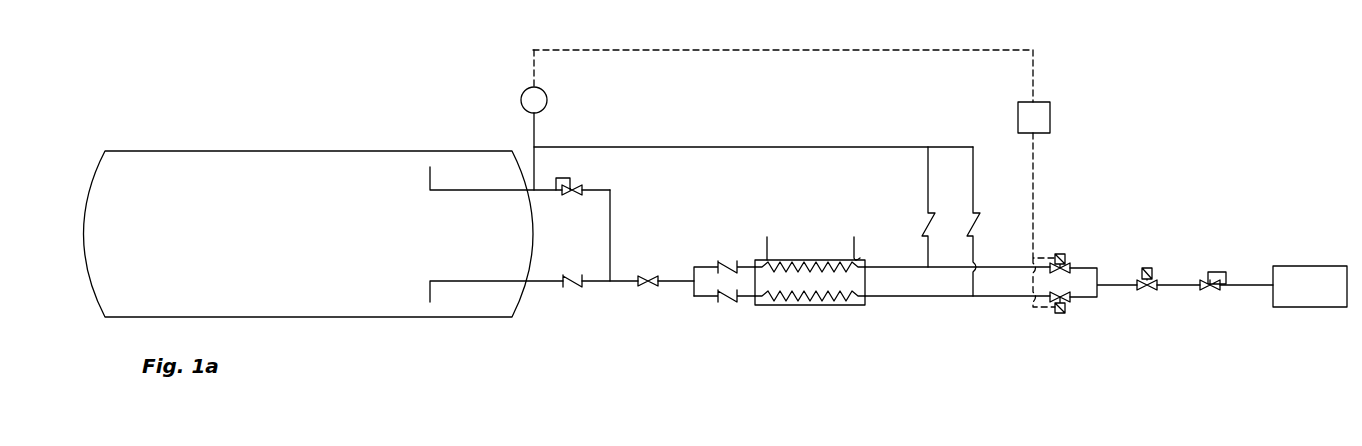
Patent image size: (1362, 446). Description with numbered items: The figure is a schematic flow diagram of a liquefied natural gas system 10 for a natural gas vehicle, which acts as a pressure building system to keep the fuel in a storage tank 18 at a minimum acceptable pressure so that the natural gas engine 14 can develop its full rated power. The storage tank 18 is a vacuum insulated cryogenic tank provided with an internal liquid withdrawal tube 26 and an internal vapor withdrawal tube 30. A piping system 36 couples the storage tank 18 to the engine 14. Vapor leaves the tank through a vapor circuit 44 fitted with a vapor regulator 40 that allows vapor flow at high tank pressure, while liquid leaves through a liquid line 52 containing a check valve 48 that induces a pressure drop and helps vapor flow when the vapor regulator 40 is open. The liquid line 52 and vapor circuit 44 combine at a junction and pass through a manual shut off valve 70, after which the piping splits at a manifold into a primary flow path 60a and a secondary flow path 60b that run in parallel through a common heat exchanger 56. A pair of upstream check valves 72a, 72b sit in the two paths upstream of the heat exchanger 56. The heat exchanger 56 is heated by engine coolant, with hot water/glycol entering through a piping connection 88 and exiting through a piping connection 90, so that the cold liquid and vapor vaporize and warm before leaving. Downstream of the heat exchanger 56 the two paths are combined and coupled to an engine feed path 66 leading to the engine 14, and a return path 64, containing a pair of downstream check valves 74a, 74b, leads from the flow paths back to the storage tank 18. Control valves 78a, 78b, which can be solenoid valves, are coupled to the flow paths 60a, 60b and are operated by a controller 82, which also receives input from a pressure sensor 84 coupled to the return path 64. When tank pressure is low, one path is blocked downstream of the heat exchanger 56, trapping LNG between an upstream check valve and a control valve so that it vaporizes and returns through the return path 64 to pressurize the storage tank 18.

The liquefied natural gas (LNG) system 10 is at (452, 355).
The natural gas engine 14 is at (1308, 265).
The storage tank 18 is at (337, 150).
The internal liquid withdrawal tube 26 is at (429, 295).
The internal vapor withdrawal tube 30 is at (429, 173).
The piping system 36 is at (884, 111).
The vapor regulator 40 is at (574, 178).
The vapor circuit 44 is at (612, 212).
The check valve 48 is at (571, 288).
The liquid line 52 is at (541, 283).
The heat exchanger 56 is at (778, 307).
The primary flow path 60a is at (805, 265).
The secondary flow path 60b is at (823, 303).
The return path 64 is at (782, 147).
The engine feed path 66 is at (1116, 306).
The manual shut off valve 70 is at (645, 287).
The upstream check valve 72a is at (727, 256).
The upstream check valve 72b is at (727, 307).
The downstream check valve 74a is at (922, 225).
The downstream check valve 74b is at (985, 227).
The control valve 78a is at (1057, 253).
The control valve 78b is at (1066, 320).
The controller 82 is at (1050, 118).
The pressure sensor 84 is at (521, 100).
The piping connection 88 is at (765, 248).
The piping connection 90 is at (857, 230).